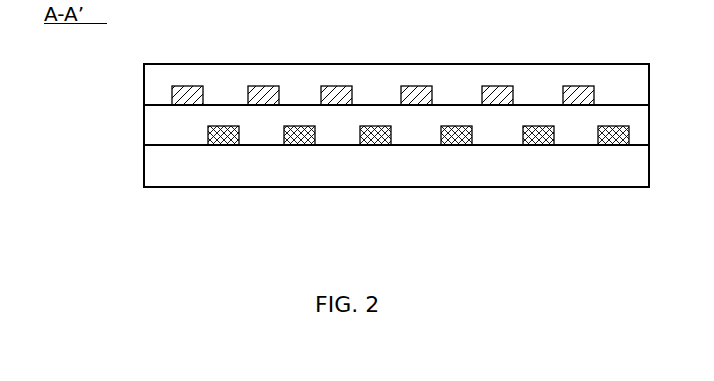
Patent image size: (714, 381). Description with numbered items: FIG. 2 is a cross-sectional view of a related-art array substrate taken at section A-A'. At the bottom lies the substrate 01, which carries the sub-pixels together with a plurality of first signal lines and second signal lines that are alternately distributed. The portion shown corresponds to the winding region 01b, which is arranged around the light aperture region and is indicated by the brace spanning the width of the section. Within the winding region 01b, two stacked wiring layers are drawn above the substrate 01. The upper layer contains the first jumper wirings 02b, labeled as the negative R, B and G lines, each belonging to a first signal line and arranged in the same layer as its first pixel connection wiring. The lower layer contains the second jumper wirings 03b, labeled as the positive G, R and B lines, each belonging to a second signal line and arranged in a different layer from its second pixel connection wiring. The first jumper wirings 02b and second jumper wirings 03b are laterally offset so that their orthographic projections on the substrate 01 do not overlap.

The first jumper wiring 02b is at (187, 94).
The second jumper wiring 03b is at (223, 138).
The substrate 01 is at (645, 195).
The winding region 01b is at (367, 155).